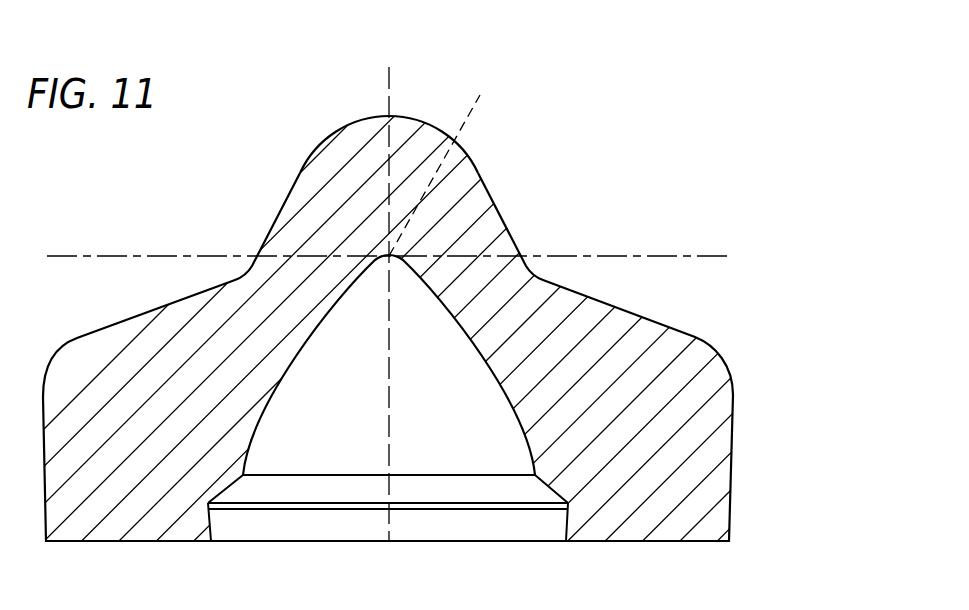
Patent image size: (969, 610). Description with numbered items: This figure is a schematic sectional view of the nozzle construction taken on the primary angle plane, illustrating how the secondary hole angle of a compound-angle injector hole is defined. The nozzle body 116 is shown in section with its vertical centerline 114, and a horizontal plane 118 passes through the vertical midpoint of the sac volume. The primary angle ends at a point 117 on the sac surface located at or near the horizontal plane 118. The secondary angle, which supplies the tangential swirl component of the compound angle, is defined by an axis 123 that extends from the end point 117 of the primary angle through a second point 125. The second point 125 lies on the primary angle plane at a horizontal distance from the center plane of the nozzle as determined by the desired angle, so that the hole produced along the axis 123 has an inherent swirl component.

The vertical centerline 114 is at (389, 89).
The nozzle body 116 is at (722, 360).
The point on the sac surface 117 is at (389, 256).
The horizontal plane 118 is at (698, 256).
The secondary angle axis 123 is at (452, 143).
The second point 125 is at (477, 100).